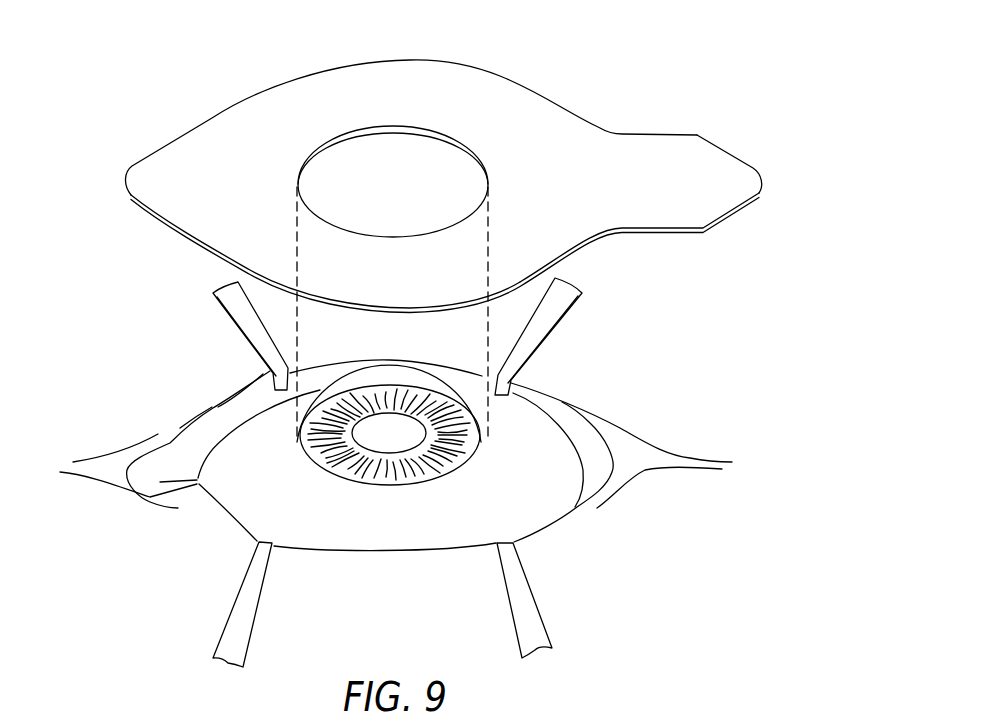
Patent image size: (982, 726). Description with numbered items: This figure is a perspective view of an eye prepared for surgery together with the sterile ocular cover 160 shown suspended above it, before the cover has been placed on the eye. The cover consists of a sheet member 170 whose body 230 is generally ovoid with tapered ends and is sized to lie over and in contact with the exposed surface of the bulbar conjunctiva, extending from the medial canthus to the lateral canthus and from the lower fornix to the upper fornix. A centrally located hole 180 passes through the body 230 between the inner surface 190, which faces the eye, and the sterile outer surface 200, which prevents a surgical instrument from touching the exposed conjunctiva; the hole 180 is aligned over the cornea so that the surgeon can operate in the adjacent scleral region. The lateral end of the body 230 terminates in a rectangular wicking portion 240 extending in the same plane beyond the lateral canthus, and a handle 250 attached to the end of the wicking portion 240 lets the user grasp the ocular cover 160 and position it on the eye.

The sterile ocular cover 160 is at (305, 52).
The sheet member 170 is at (492, 97).
The hole 180 is at (390, 177).
The inner surface 190 is at (194, 213).
The outer surface 200 is at (230, 153).
The body 230 is at (393, 267).
The wicking portion 240 is at (647, 190).
The handle 250 is at (750, 183).